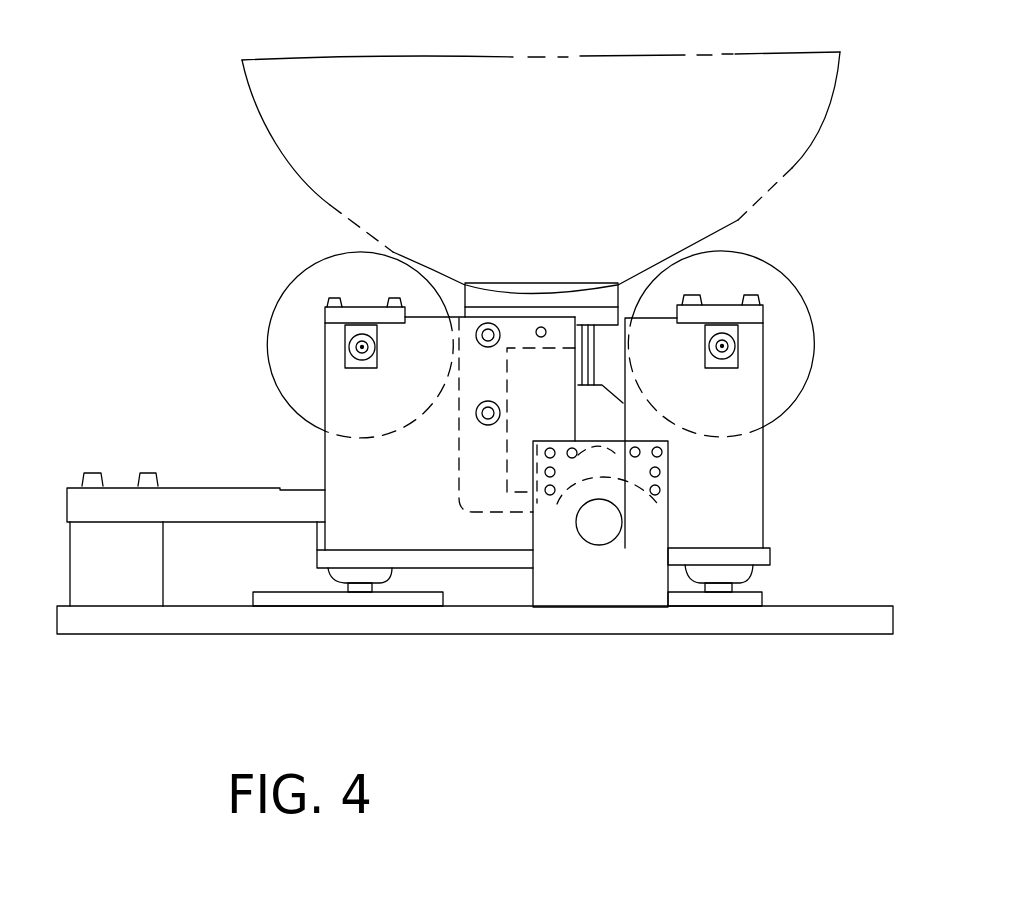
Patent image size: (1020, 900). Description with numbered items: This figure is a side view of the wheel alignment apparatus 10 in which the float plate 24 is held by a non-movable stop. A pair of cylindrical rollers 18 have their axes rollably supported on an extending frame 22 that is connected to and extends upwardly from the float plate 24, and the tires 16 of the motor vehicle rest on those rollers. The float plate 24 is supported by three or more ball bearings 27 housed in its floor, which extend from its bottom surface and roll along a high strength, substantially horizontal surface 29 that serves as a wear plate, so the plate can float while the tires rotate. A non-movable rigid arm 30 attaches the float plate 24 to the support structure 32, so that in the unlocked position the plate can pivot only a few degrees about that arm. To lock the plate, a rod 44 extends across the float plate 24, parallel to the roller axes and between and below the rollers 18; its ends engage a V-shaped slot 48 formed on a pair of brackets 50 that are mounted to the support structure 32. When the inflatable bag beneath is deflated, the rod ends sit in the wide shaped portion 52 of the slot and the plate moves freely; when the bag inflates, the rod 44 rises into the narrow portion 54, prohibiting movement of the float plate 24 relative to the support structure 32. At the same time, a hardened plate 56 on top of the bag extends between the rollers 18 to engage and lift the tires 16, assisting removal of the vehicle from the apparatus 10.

The wheel alignment apparatus 10 is at (806, 493).
The tires 16 is at (793, 160).
The rollers 18 is at (318, 262).
The extending frame 22 is at (765, 452).
The float plate 24 is at (770, 557).
The ball bearings 27 is at (365, 590).
The horizontal surface 29 is at (435, 588).
The rigid arm 30 is at (207, 484).
The support structure 32 is at (203, 618).
The rod 44 is at (601, 448).
The V-shaped slot 48 is at (628, 486).
The brackets 50 is at (592, 594).
The wide shaped portion 52 is at (643, 503).
The narrow portion 54 is at (593, 408).
The hardened plate 56 is at (596, 286).